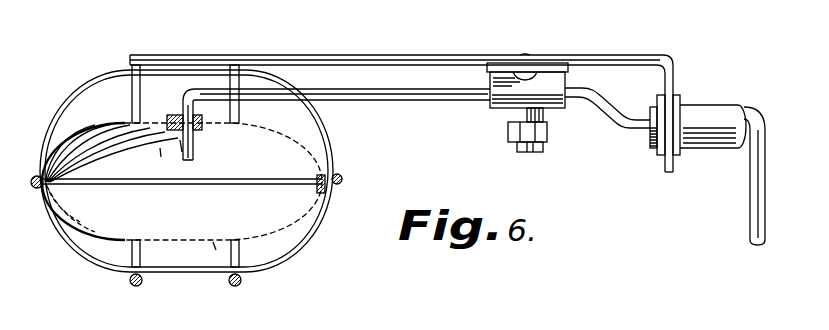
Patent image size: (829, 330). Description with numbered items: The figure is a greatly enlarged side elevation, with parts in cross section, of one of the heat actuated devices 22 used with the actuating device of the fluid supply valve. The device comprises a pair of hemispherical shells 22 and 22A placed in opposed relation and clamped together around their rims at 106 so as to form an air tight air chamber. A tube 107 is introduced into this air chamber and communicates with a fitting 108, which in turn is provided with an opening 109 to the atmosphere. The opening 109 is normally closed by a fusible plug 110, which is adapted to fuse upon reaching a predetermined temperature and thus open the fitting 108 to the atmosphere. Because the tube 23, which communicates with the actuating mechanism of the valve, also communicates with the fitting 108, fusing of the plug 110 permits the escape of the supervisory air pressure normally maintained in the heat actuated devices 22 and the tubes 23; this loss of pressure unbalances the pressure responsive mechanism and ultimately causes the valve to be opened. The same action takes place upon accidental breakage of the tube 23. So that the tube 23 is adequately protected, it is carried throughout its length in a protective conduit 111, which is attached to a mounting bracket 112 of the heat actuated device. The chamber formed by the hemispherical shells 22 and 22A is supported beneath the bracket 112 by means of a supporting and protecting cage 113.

The heat actuated device 22 is at (297, 222).
The hemispherical shell 22A is at (310, 157).
The tube 23 is at (603, 106).
The clamped rim 106 is at (330, 188).
The tube 107 is at (400, 101).
The fitting 108 is at (497, 108).
The opening 109 is at (523, 111).
The fusible plug 110 is at (548, 133).
The protective conduit 111 is at (703, 110).
The mounting bracket 112 is at (667, 62).
The supporting and protecting cage 113 is at (55, 218).